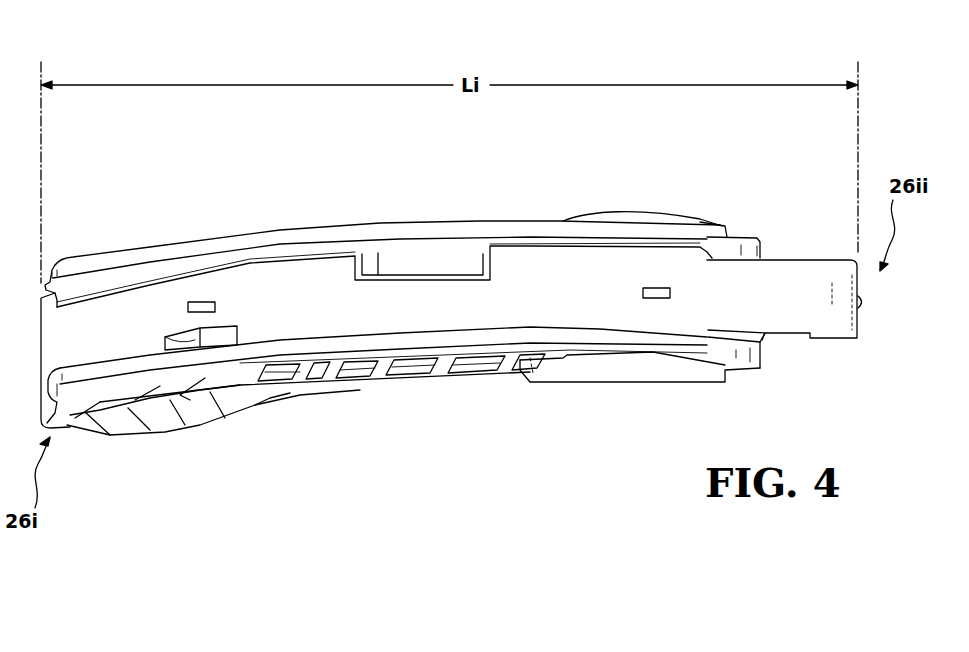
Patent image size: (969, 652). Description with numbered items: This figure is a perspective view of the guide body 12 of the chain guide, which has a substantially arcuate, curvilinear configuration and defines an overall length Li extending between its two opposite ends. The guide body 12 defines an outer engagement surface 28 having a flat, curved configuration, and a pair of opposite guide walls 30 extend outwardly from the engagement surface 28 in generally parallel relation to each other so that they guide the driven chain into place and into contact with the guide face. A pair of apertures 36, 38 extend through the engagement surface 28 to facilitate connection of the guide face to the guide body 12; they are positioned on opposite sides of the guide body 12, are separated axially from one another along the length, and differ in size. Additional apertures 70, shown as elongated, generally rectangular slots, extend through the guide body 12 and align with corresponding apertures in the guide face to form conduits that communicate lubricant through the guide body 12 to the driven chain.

The guide body 12 is at (390, 393).
The engagement surface 28 is at (637, 270).
The guide walls 30 is at (398, 222).
The aperture 36 is at (478, 232).
The aperture 38 is at (183, 335).
The apertures 70 is at (207, 300).